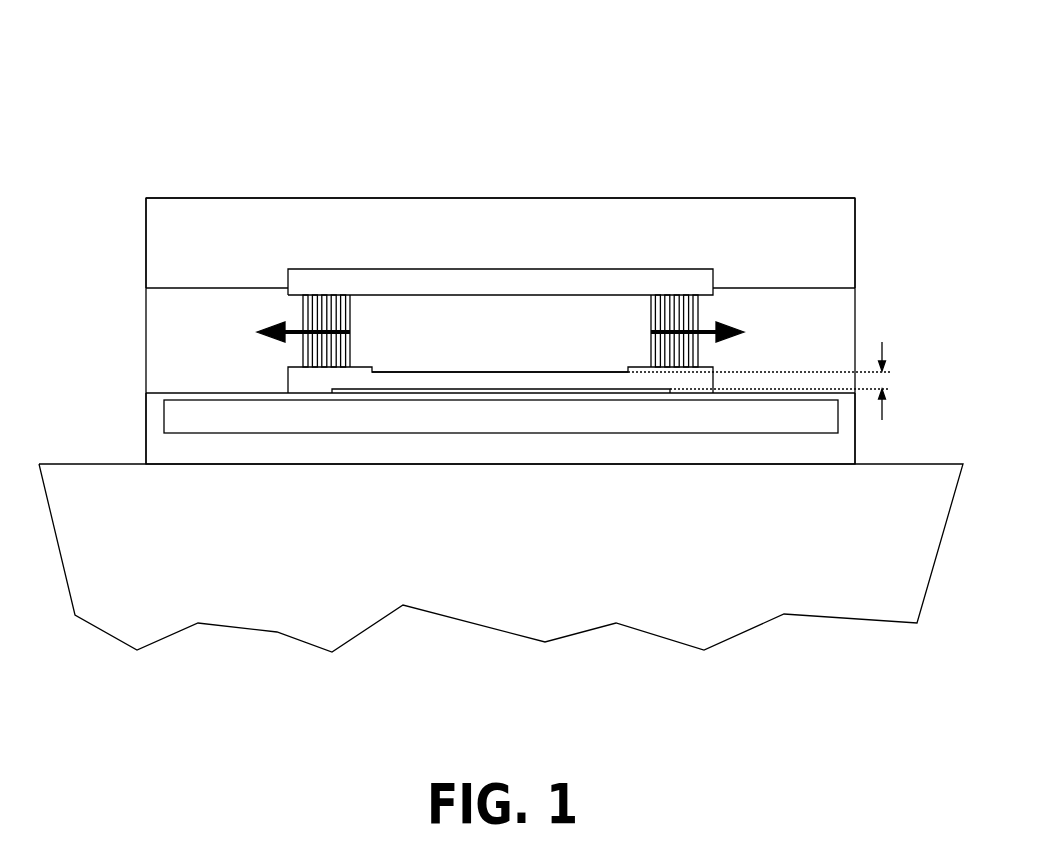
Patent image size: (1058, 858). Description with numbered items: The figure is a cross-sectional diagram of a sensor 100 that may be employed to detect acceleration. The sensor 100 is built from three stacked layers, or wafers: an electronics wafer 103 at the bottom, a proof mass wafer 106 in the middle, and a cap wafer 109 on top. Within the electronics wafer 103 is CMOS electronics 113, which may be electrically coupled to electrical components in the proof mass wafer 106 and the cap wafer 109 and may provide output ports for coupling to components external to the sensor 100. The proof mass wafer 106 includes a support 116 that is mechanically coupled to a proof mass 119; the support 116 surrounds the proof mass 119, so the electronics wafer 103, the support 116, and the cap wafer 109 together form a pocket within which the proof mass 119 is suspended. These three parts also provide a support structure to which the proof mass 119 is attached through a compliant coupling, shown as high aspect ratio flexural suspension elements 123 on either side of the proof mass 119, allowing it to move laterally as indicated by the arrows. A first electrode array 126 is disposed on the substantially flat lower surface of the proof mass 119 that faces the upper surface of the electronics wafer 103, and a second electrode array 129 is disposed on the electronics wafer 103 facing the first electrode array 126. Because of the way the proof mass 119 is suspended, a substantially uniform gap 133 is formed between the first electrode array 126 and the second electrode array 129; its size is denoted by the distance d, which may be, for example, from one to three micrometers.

The sensor 100 is at (777, 106).
The electronics wafer 103 is at (501, 522).
The proof mass wafer 106 is at (135, 343).
The cap wafer 109 is at (500, 243).
The CMOS electronics 113 is at (501, 416).
The support 116 is at (180, 377).
The proof mass 119 is at (500, 331).
The high aspect ratio flexural suspension elements 123 is at (318, 290).
The first electrode array 126 is at (387, 370).
The second electrode array 129 is at (622, 392).
The gap 133 is at (358, 378).